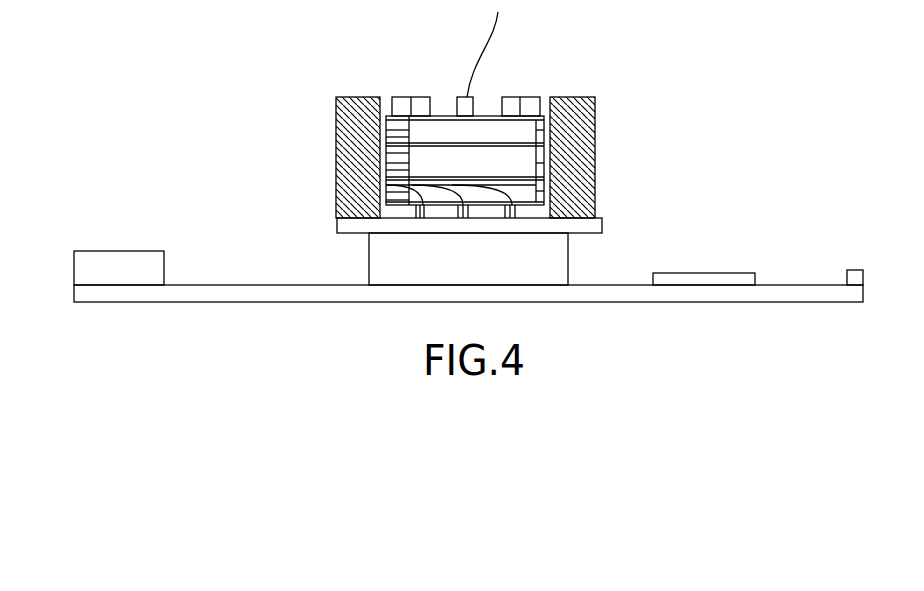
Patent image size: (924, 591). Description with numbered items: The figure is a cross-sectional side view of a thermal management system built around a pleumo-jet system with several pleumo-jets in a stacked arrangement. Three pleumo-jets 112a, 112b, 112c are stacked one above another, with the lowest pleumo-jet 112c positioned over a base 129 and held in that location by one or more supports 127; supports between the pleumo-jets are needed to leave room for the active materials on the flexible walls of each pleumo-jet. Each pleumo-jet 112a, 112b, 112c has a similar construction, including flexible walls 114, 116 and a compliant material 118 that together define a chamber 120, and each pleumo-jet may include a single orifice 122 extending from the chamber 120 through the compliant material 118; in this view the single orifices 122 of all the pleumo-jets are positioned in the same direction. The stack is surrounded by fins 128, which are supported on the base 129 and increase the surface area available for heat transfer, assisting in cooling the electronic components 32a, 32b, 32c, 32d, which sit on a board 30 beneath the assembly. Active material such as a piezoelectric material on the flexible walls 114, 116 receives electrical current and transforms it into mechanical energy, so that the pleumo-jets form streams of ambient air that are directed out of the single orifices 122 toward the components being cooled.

The circuit board 30 is at (832, 295).
The electronic component 32a is at (164, 263).
The electronic component 32b is at (373, 268).
The electronic component 32c is at (705, 272).
The electronic component 32d is at (858, 270).
The pleumo-jet 112a is at (536, 130).
The pleumo-jet 112b is at (536, 163).
The pleumo-jet 112c is at (536, 191).
The flexible wall 114 is at (428, 143).
The flexible wall 116 is at (517, 140).
The compliant material 118 is at (387, 138).
The chamber 120 is at (465, 160).
The single orifice 122 is at (402, 130).
The support 127 is at (400, 188).
The fins 128 is at (357, 105).
The base 129 is at (602, 228).